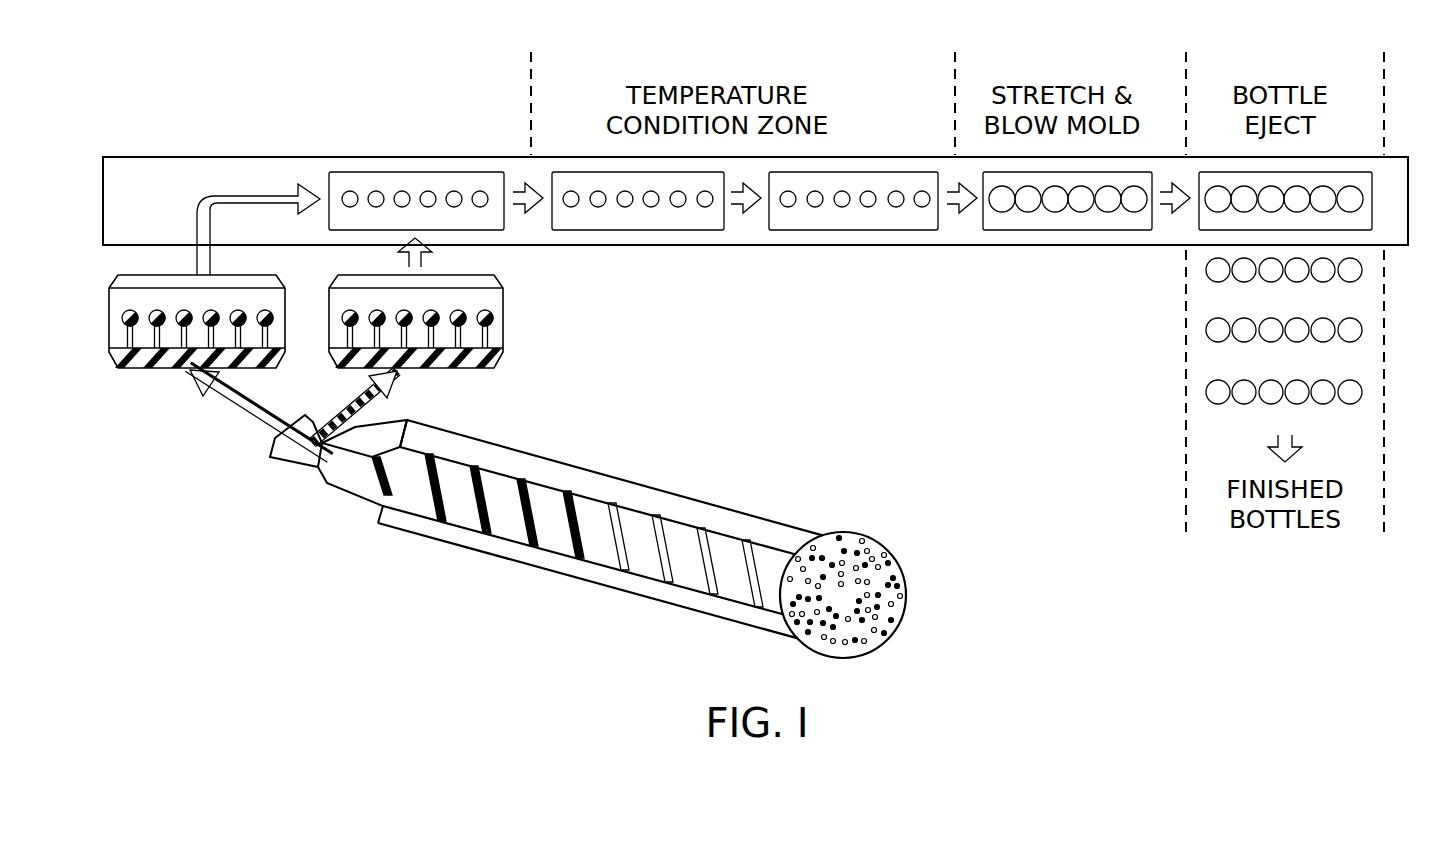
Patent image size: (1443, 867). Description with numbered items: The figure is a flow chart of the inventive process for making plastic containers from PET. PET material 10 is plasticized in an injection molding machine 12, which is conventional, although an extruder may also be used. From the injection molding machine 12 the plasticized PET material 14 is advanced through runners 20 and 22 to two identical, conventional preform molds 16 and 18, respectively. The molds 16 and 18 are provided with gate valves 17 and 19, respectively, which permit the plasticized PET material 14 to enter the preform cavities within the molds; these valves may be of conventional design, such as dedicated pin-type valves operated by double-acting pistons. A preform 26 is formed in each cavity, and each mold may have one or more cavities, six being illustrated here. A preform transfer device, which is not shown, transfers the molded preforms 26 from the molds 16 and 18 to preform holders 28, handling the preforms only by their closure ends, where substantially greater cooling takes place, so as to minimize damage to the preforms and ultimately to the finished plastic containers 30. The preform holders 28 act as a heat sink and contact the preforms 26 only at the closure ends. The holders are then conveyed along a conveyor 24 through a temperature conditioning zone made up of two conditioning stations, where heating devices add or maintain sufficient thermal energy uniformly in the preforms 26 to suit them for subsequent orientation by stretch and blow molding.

The PET material 10 is at (865, 565).
The injection molding machine 12 is at (637, 480).
The plasticized PET material 14 is at (345, 462).
The preform mold 16 is at (109, 302).
The gate valve 17 is at (128, 340).
The preform mold 18 is at (503, 300).
The gate valve 19 is at (486, 342).
The runner 20 is at (245, 405).
The runner 22 is at (370, 403).
The conveyor 24 is at (260, 165).
The preform 26 is at (370, 192).
The preform holder 28 is at (416, 174).
The finished plastic container 30 is at (1110, 207).